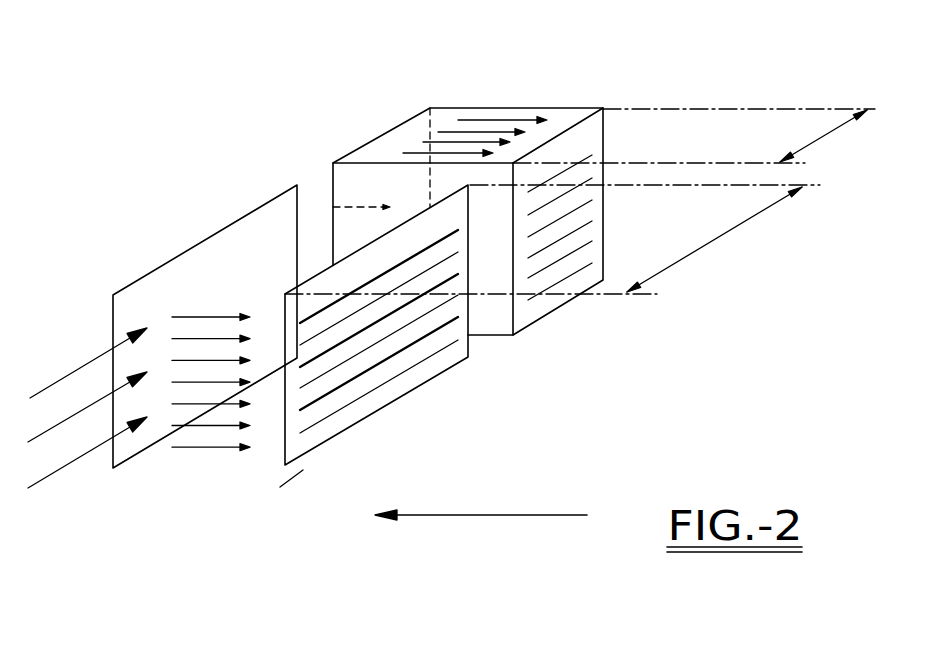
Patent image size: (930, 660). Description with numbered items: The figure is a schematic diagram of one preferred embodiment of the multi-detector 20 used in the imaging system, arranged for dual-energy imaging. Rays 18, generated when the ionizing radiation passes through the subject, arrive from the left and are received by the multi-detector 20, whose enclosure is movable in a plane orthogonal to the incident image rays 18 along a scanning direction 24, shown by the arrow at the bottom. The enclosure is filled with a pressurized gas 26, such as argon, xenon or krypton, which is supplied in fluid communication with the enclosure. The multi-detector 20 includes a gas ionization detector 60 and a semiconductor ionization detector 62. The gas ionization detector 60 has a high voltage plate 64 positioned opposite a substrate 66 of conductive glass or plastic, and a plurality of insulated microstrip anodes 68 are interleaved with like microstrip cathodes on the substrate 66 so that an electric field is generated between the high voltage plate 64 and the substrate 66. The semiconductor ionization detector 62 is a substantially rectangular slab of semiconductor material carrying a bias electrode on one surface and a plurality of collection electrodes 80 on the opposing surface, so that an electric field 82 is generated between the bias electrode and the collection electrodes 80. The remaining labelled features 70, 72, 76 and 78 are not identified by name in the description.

The rays 18 is at (62, 468).
The multi-detector 20 is at (198, 134).
The scanning direction 24 is at (495, 513).
The pressurized gas 26 is at (252, 464).
The gas ionization detector 60 is at (706, 246).
The semiconductor ionization detector 62 is at (817, 140).
The high voltage plate 64 is at (186, 232).
The substrate 66 is at (323, 443).
The insulated microstrip anodes 68 is at (383, 400).
The upper louver 70 is at (466, 320).
The parallel rays 72 is at (210, 464).
The detector block 76 is at (582, 95).
The central axis 78 is at (333, 207).
The collection electrodes 80 is at (552, 306).
The electric field 82 is at (500, 110).